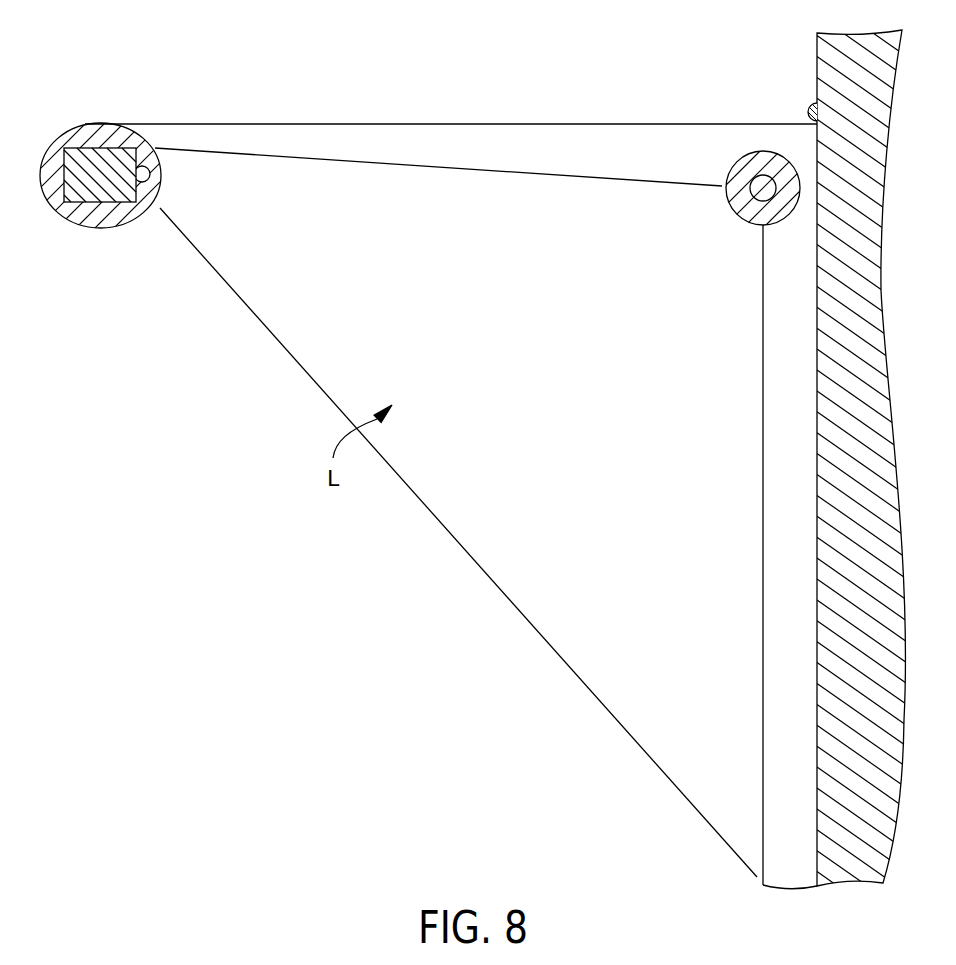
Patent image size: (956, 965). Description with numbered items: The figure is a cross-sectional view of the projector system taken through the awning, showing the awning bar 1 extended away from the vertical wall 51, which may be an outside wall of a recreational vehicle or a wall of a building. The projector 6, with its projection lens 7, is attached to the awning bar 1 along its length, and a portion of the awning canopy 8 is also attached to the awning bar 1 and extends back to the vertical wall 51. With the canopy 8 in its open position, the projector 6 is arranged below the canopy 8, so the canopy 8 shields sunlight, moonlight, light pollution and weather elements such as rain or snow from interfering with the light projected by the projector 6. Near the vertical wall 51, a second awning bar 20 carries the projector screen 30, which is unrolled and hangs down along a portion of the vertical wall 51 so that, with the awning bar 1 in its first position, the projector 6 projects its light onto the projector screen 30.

The awning bar 1 is at (60, 137).
The projector 6 is at (97, 148).
The projection lens 7 is at (144, 166).
The awning canopy 8 is at (288, 123).
The second awning bar 20 is at (740, 207).
The projector screen 30 is at (763, 425).
The vertical wall 51 is at (817, 71).